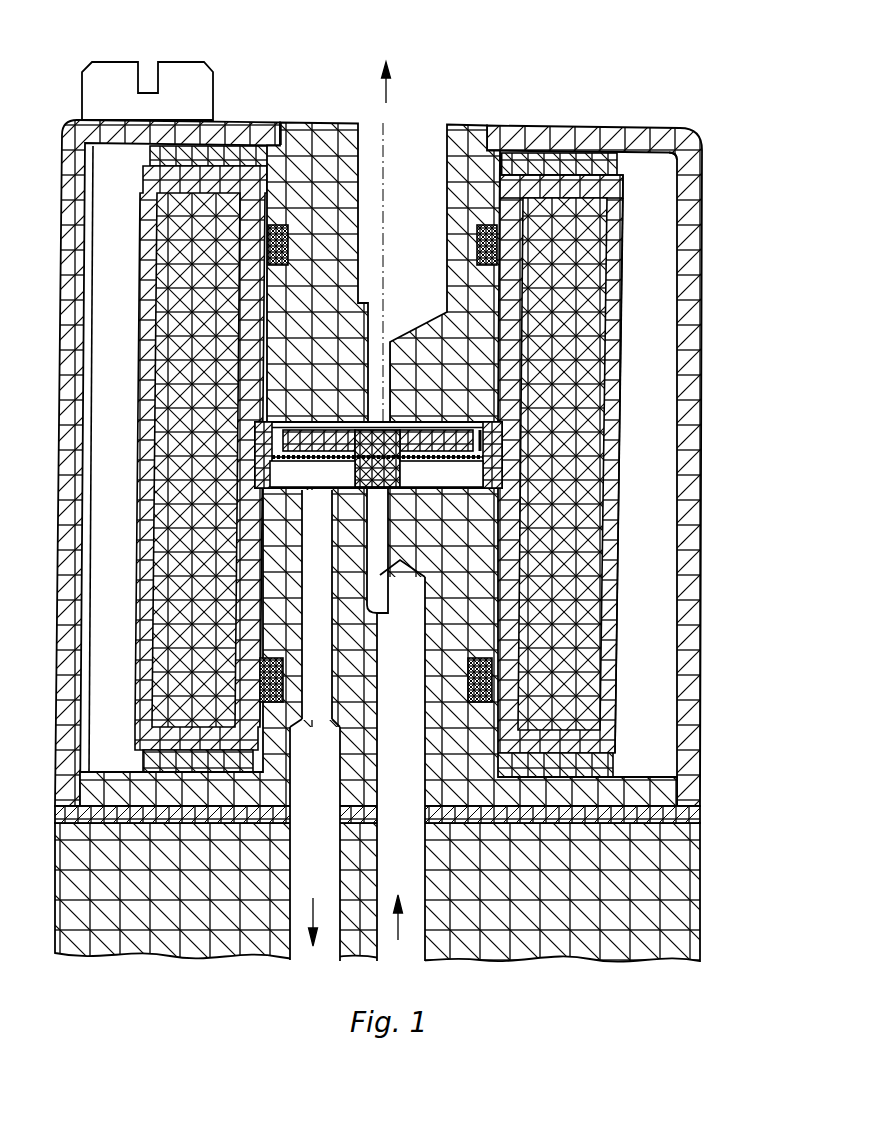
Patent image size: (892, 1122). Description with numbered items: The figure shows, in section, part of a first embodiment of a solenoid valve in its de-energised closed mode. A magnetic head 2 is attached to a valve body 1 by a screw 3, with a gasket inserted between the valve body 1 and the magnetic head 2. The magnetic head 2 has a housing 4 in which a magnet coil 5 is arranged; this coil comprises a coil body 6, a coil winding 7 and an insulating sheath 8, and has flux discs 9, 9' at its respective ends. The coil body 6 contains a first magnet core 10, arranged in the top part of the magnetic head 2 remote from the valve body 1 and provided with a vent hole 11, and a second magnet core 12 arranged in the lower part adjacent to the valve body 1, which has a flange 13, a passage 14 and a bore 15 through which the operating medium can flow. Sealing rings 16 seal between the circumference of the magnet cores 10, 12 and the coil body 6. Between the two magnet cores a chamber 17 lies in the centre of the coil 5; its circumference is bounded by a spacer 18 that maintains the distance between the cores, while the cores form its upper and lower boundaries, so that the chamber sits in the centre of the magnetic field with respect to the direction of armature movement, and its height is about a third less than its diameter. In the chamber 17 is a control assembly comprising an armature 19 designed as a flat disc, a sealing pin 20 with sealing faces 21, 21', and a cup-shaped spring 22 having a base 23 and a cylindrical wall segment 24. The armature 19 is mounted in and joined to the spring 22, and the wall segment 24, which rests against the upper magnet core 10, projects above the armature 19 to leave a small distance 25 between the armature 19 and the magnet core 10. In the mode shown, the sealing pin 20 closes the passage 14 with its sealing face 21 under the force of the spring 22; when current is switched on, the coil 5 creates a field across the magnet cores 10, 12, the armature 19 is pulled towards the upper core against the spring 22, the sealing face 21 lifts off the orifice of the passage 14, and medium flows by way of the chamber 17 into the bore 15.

The valve body 1 is at (670, 878).
The magnetic head 2 is at (718, 324).
The screw 3 is at (201, 68).
The housing 4 is at (690, 162).
The magnet coil 5 is at (636, 203).
The coil body 6 is at (607, 232).
The coil winding 7 is at (570, 283).
The insulating sheath 8 is at (442, 459).
The flux disc 9 is at (383, 98).
The flux disc 9' is at (447, 770).
The first magnet core 10 is at (325, 165).
The vent hole 11 is at (386, 183).
The second magnet core 12 is at (423, 647).
The flange 13 is at (407, 811).
The passage 14 is at (308, 653).
The bore 15 is at (619, 732).
The sealing rings 16 is at (509, 382).
The chamber 17 is at (571, 766).
The spacer 18 is at (560, 466).
The armature 19 is at (510, 437).
The sealing pin 20 is at (510, 422).
The sealing face 21 is at (573, 587).
The sealing face 21' is at (521, 378).
The spring 22 is at (583, 495).
The base 23 is at (518, 510).
The cylindrical wall segment 24 is at (519, 463).
The distance 25 is at (524, 436).